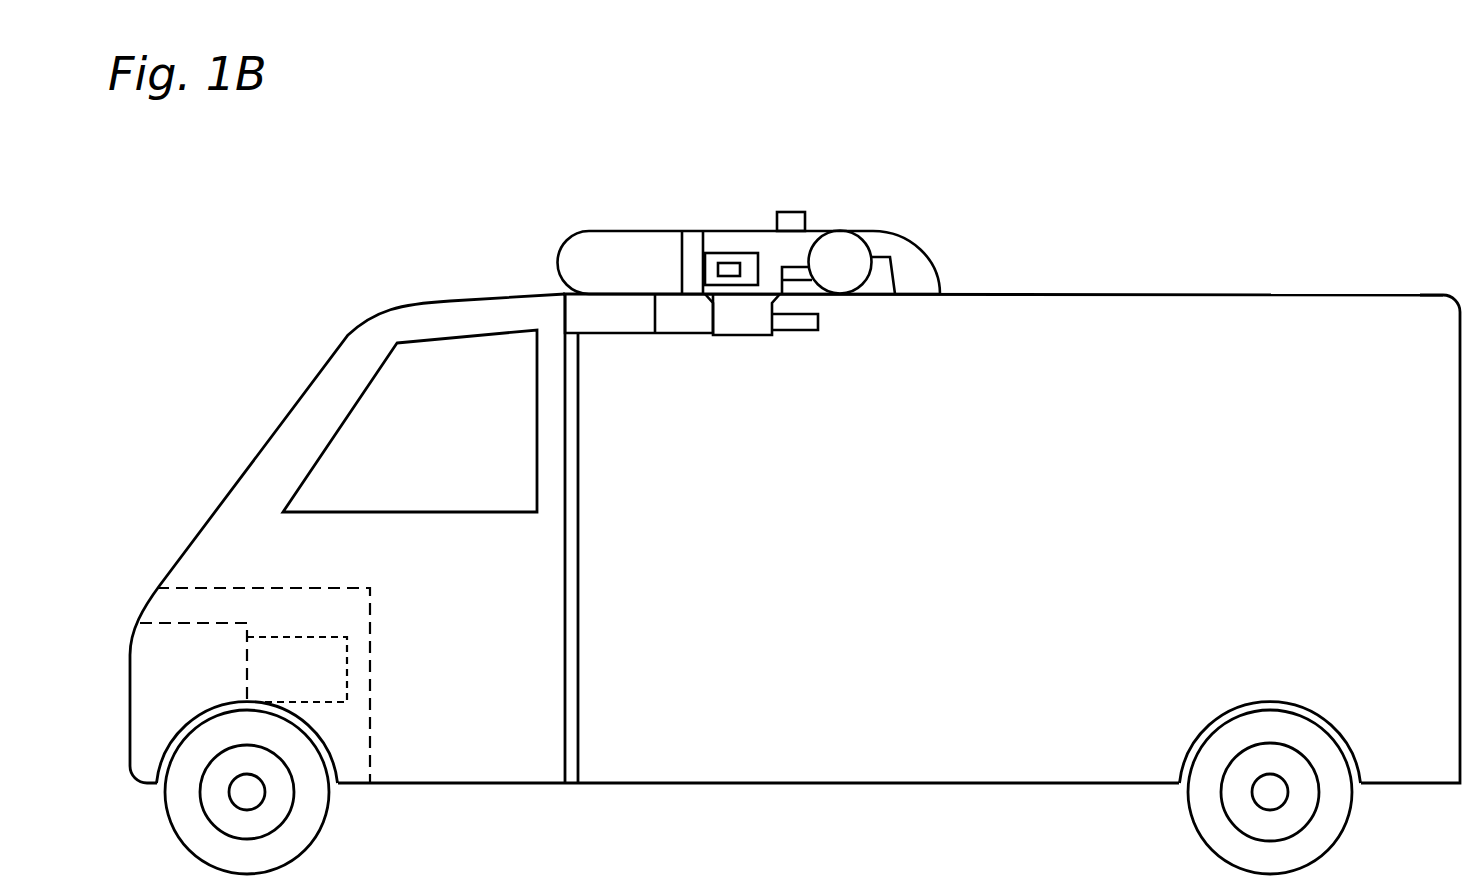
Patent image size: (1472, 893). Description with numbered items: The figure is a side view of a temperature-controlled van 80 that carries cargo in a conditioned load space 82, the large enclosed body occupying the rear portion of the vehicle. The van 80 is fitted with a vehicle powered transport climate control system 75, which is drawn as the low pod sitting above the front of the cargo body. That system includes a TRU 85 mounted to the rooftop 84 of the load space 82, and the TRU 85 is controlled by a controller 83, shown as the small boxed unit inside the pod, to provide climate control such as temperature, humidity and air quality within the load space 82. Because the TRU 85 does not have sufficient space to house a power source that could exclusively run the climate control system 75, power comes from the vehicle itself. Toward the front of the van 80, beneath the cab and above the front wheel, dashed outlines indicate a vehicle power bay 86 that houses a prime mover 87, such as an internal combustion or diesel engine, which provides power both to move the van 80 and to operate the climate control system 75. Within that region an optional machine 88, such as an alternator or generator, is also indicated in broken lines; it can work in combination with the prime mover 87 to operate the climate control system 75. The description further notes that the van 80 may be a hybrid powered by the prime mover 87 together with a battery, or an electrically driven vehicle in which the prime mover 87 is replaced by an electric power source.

The vehicle powered transport climate control system 75 is at (892, 170).
The temperature-controlled van 80 is at (292, 323).
The conditioned load space 82 is at (1322, 328).
The controller 83 is at (729, 262).
The rooftop 84 is at (1132, 295).
The TRU 85 is at (912, 242).
The vehicle power bay 86 is at (203, 588).
The prime mover 87 is at (167, 623).
The optional machine 88 is at (347, 687).